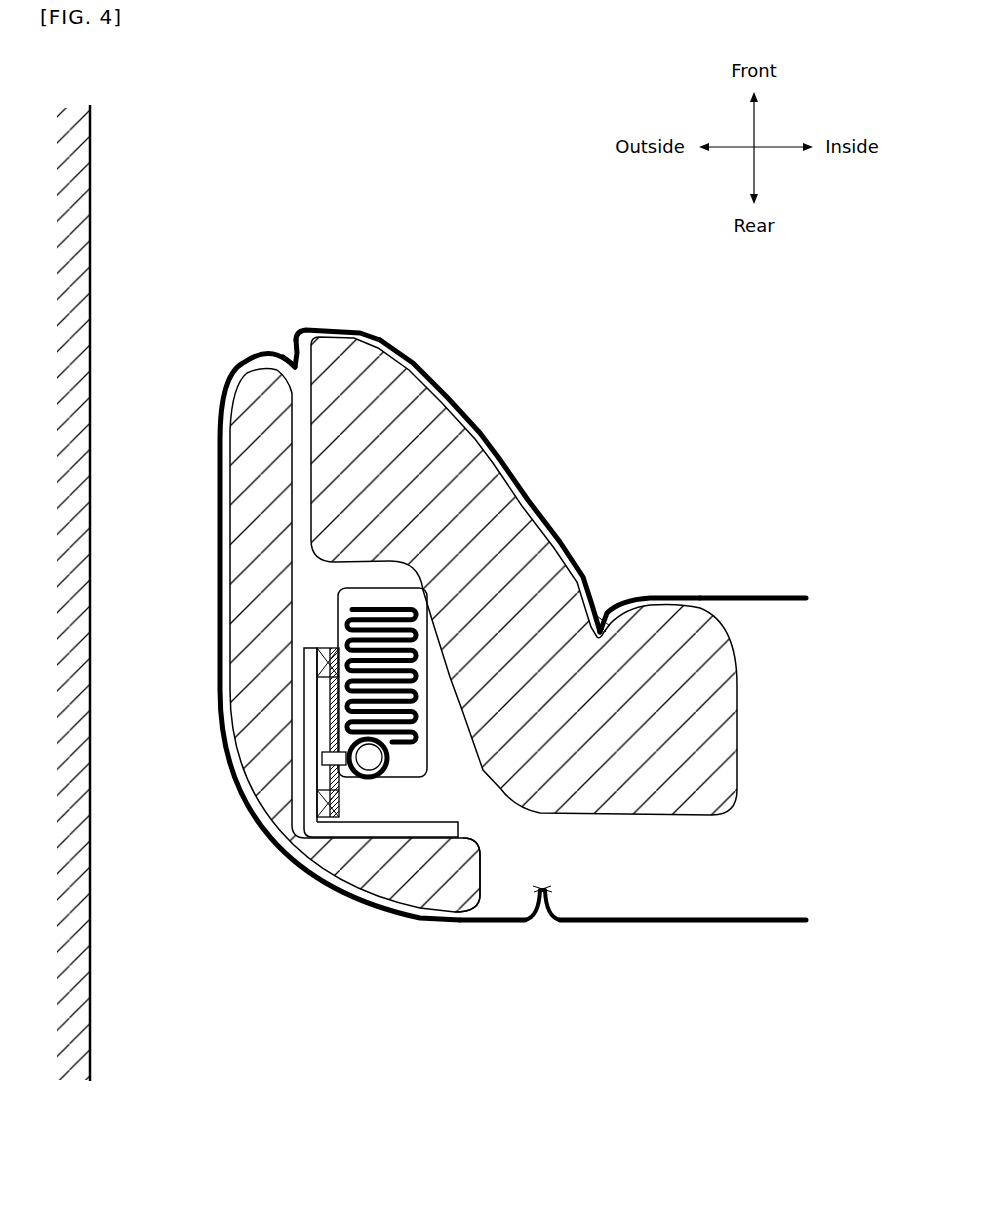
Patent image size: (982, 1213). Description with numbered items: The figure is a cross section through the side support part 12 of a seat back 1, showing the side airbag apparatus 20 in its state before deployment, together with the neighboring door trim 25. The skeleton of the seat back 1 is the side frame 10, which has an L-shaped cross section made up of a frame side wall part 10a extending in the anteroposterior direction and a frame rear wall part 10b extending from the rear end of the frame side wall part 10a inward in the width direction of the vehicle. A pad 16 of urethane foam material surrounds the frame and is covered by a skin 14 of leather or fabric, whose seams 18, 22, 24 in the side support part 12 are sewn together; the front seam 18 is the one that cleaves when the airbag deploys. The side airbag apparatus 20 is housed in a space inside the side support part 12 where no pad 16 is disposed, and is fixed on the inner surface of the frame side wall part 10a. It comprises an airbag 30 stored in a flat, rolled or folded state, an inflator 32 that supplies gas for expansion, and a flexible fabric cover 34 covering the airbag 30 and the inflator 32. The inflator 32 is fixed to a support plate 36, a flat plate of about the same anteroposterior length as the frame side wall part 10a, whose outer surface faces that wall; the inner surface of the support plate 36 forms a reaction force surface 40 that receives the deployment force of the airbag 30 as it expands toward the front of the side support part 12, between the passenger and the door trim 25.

The seat back 1 is at (788, 853).
The side frame 10 is at (307, 832).
The frame side wall part 10a is at (307, 747).
The frame rear wall part 10b is at (360, 840).
The side support part 12 is at (474, 373).
The skin 14 is at (366, 327).
The pad 16 is at (255, 462).
The front seam 18 is at (283, 357).
The side airbag apparatus 20 is at (344, 633).
The seam 22 is at (607, 613).
The seam 24 is at (543, 916).
The door trim 25 is at (90, 183).
The airbag 30 is at (413, 743).
The inflator 32 is at (372, 762).
The cover 34 is at (392, 590).
The support plate 36 is at (333, 710).
The reaction force surface 40 is at (338, 652).